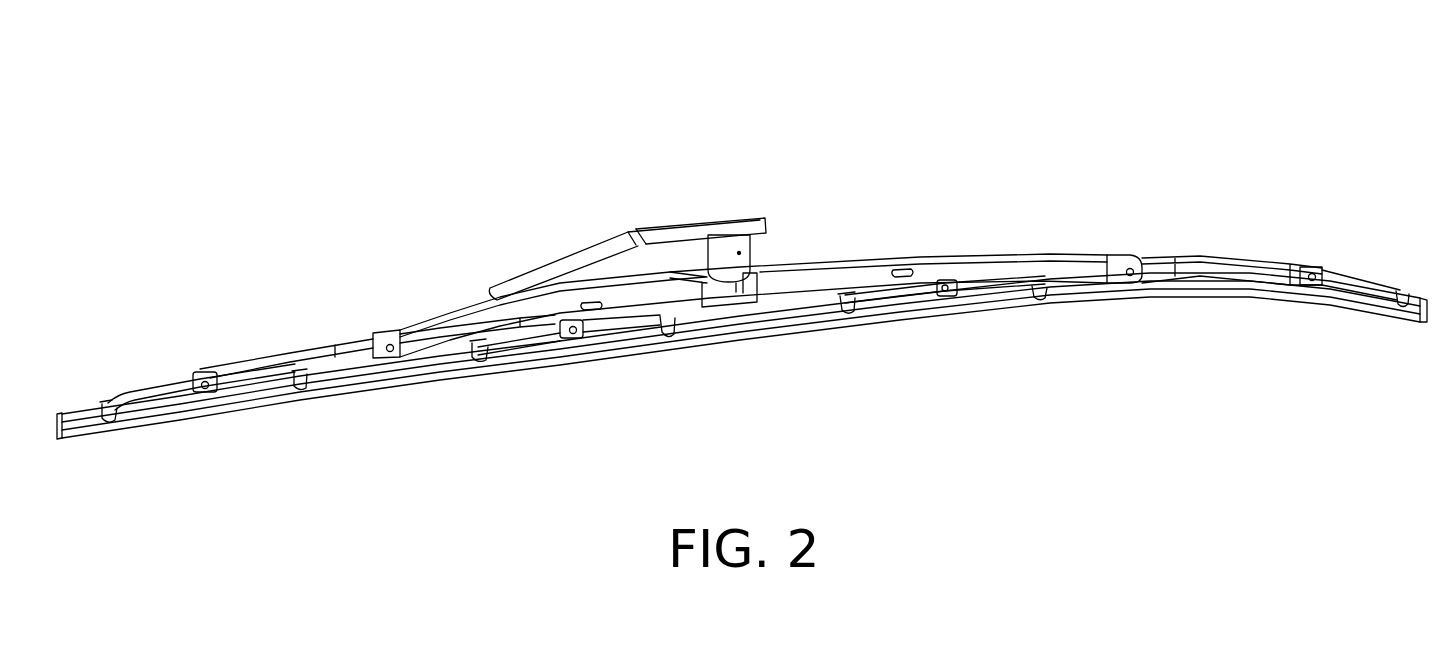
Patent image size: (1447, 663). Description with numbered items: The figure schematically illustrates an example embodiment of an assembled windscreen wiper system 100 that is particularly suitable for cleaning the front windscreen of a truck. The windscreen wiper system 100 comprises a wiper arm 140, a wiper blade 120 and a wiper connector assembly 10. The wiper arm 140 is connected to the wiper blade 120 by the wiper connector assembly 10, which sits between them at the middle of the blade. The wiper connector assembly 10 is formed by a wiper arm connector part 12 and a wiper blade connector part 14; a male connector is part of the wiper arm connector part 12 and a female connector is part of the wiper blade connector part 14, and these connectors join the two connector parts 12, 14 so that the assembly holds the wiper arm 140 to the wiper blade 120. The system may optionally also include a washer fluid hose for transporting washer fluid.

The windscreen wiper system 100 is at (462, 92).
The wiper connector assembly 10 is at (785, 243).
The wiper arm connector part 12 is at (705, 292).
The wiper blade connector part 14 is at (712, 220).
The wiper arm 140 is at (646, 226).
The wiper blade 120 is at (628, 347).